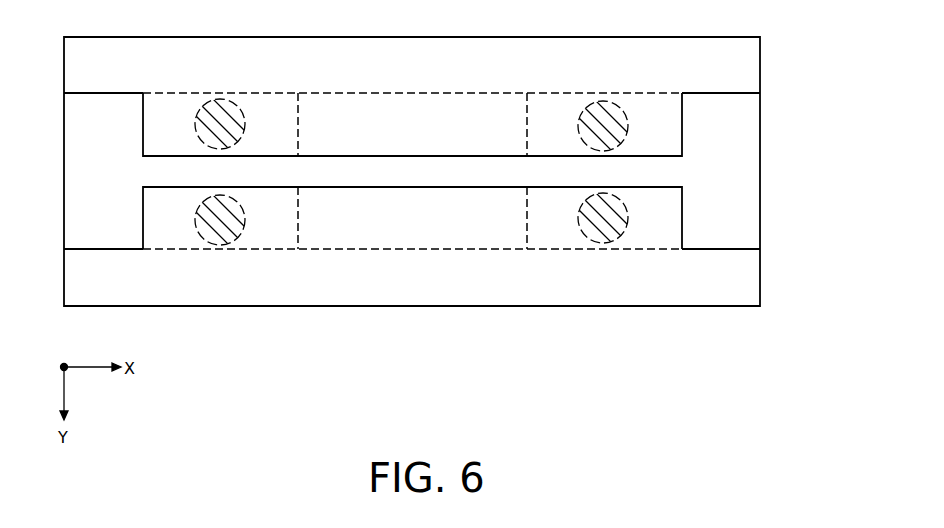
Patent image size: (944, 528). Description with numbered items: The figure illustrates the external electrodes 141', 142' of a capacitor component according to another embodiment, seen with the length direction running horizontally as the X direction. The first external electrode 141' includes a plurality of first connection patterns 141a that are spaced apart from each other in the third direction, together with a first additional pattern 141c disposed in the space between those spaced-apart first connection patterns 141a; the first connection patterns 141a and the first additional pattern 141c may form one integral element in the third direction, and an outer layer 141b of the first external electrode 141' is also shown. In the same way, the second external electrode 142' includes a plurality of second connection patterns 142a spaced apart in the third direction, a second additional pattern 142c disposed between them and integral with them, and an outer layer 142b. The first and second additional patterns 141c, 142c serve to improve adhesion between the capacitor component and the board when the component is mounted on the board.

The first external electrode 141' is at (478, 104).
The first connection patterns 141a is at (670, 105).
The first outer layer 141b is at (743, 65).
The first additional pattern 141c is at (502, 136).
The second external electrode 142' is at (478, 238).
The second connection patterns 142a is at (667, 235).
The second outer layer 142b is at (743, 277).
The second additional pattern 142c is at (502, 210).